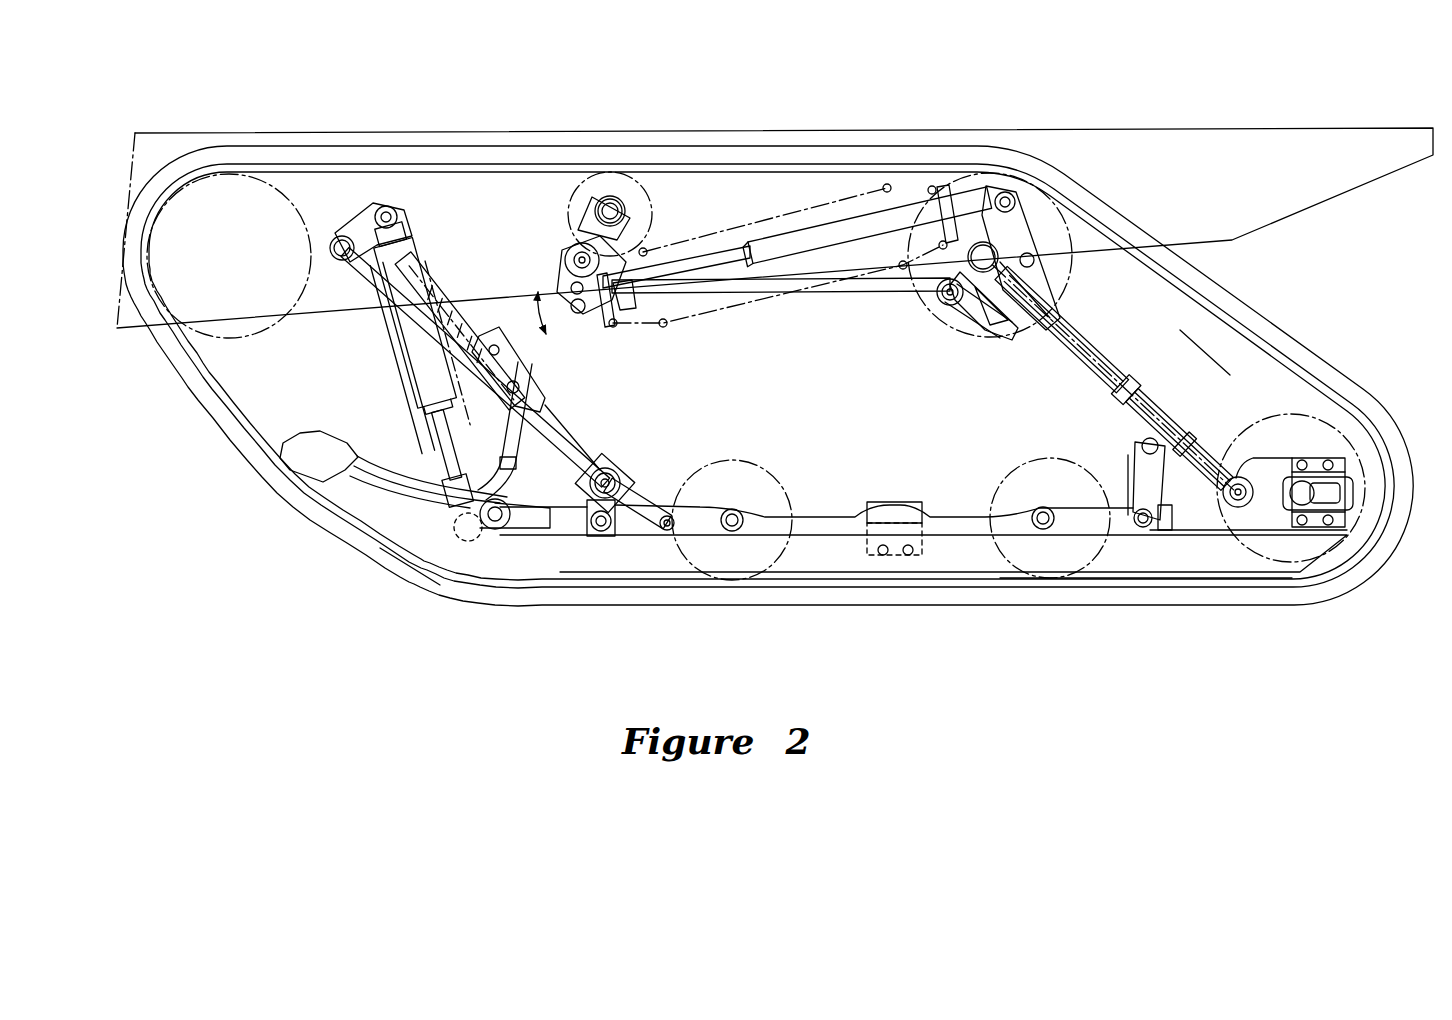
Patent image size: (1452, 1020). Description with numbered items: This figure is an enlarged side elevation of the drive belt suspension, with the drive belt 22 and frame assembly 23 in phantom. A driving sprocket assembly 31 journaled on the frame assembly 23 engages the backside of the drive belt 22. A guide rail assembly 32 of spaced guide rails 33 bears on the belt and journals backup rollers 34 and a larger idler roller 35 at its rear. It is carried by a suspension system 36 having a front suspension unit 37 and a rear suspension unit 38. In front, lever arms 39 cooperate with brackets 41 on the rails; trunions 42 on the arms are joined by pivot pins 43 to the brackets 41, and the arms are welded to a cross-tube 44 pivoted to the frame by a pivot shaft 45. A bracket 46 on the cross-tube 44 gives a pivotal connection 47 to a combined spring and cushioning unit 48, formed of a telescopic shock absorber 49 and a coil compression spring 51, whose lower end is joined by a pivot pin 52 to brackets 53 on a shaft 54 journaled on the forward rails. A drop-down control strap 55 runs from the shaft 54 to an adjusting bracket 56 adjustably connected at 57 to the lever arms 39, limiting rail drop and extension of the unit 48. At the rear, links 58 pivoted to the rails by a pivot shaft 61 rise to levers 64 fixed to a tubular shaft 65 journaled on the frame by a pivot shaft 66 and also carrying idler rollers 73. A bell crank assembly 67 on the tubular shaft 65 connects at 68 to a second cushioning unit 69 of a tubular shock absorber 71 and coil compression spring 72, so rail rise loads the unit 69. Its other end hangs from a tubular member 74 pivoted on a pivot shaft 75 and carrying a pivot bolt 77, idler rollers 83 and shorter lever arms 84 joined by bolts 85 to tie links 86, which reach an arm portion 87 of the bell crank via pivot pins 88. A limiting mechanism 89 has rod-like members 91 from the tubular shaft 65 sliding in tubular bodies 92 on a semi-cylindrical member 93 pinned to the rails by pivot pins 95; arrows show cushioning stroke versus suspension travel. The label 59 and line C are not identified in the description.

The drive belt 22 is at (248, 462).
The frame assembly 23 is at (1195, 130).
The driving sprocket assembly 31 is at (287, 176).
The guide rail assembly 32 is at (853, 558).
The guide rails 33 is at (967, 556).
The backup rollers 34 is at (735, 460).
The idler roller 35 is at (1302, 405).
The suspension system 36 is at (1195, 350).
The front suspension unit 37 is at (582, 405).
The rear suspension unit 38 is at (1077, 461).
The lever arms 39 is at (558, 412).
The brackets 41 is at (580, 532).
The trunions 42 is at (598, 497).
The pivot pins 43 is at (662, 514).
The cross-tube 44 is at (318, 288).
The pivot shaft 45 is at (328, 250).
The bracket 46 is at (354, 228).
The pivotal connection 47 is at (410, 186).
The combined spring and cushioning unit 48 is at (380, 364).
The telescopic shock absorber 49 is at (415, 370).
The coil compression spring 51 is at (356, 489).
The pivot pin 52 is at (464, 540).
The brackets 53 is at (402, 562).
The shaft 54 is at (570, 462).
The drop-down control strap 55 is at (543, 392).
The adjusting bracket 56 is at (482, 308).
The adjustable connection 57 is at (412, 262).
The links 58 is at (1143, 480).
The rear arm pivot 59 is at (1163, 515).
The pivot shaft 61 is at (1142, 535).
The levers 64 is at (1074, 383).
The tubular shaft 65 is at (980, 280).
The pivot shaft 66 is at (996, 250).
The bell crank assembly 67 is at (1022, 228).
The pivotal connection 68 is at (1010, 194).
The second cushioning unit 69 is at (818, 306).
The tubular shock absorber 71 is at (786, 250).
The coil compression spring 72 is at (818, 196).
The idler rollers 73 is at (1013, 272).
The tubular member 74 is at (621, 197).
The pivot shaft 75 is at (596, 198).
The pivot bolt 77 is at (603, 313).
The idler rollers 83 is at (648, 200).
The lever arms 84 is at (588, 226).
The bolts 85 is at (568, 265).
The tie links 86 is at (888, 296).
The arm portion 87 is at (1000, 330).
The pivot pins 88 is at (948, 308).
The movement-limiting mechanism 89 is at (1090, 328).
The rod-like members 91 is at (1108, 354).
The tubular bodies 92 is at (1140, 384).
The semi-cylindrical member 93 is at (1229, 440).
The pivot pins 95 is at (1242, 480).
The center line C is at (1153, 516).